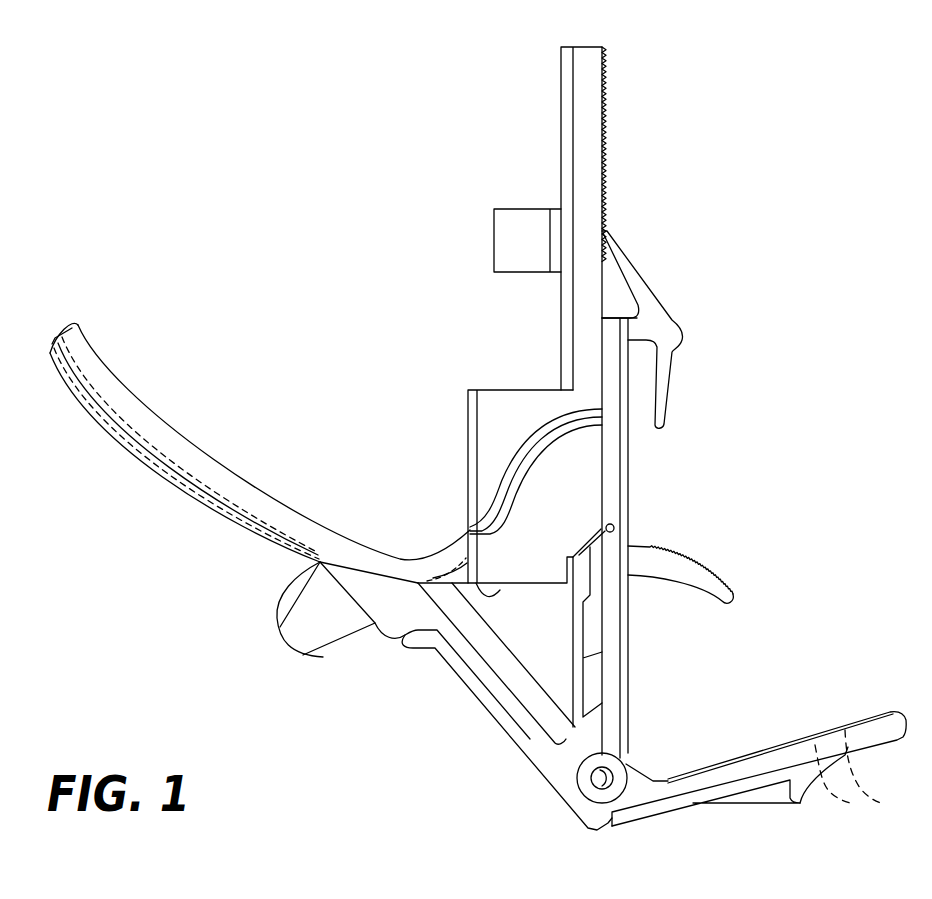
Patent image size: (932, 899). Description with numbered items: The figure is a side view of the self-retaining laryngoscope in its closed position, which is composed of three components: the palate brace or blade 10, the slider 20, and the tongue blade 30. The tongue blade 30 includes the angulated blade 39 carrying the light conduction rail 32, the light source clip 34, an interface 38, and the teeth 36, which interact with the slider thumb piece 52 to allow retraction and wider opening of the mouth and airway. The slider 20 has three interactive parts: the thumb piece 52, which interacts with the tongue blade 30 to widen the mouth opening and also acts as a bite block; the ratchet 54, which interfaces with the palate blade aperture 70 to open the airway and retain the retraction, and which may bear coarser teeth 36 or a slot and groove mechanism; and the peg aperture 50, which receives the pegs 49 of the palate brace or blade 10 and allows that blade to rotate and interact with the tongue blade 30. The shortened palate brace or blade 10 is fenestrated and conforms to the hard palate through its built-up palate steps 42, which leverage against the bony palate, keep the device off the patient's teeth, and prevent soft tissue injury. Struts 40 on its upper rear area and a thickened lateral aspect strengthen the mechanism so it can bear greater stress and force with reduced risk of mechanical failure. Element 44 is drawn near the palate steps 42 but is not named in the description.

The palate brace or blade 10 is at (775, 806).
The slider 20 is at (633, 478).
The tongue blade 30 is at (260, 453).
The light conduction rail 32 is at (140, 468).
The light source clip 34 is at (494, 209).
The teeth 36 is at (603, 137).
The interface 38 is at (498, 390).
The angulated blade 39 is at (360, 545).
The struts 40 is at (808, 787).
The palate steps 42 is at (403, 645).
The cam member 44 is at (300, 655).
The pegs 49 is at (598, 783).
The peg aperture 50 is at (612, 768).
The thumb piece 52 is at (683, 345).
The ratchet 54 is at (734, 593).
The palate blade aperture 70 is at (880, 803).